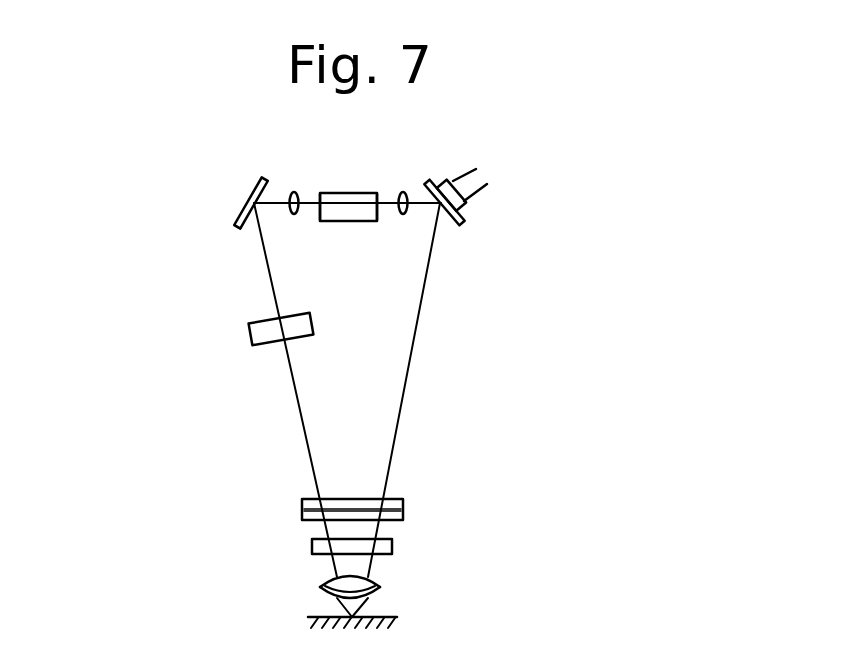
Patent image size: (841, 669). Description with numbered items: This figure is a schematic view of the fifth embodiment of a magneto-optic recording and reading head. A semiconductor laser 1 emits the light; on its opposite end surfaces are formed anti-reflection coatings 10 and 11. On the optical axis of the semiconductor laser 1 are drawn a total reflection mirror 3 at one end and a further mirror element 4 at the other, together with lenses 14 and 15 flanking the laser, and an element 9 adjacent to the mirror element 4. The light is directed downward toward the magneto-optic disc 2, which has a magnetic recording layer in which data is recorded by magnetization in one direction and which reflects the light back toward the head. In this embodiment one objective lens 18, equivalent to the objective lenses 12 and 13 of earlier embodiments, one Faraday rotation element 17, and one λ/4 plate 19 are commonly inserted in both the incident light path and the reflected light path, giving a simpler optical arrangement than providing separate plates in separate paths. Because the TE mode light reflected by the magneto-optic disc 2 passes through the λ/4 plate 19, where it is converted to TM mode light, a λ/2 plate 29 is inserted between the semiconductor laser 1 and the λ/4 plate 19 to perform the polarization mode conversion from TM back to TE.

The semiconductor laser 1 is at (354, 192).
The magneto-optic disc 2 is at (398, 616).
The total reflection mirror 3 is at (239, 212).
The mirror 4 is at (458, 226).
The detector 9 is at (468, 204).
The anti-reflection coating 10 is at (322, 222).
The anti-reflection coating 11 is at (380, 222).
The objective lens 12 is at (350, 581).
The objective lens 13 is at (382, 584).
The lens 14 is at (294, 191).
The lens 15 is at (403, 191).
The Faraday rotation element 17 is at (311, 546).
The objective lens 18 is at (424, 580).
The λ/4 plate 19 is at (419, 501).
The λ/2 plate 29 is at (249, 341).